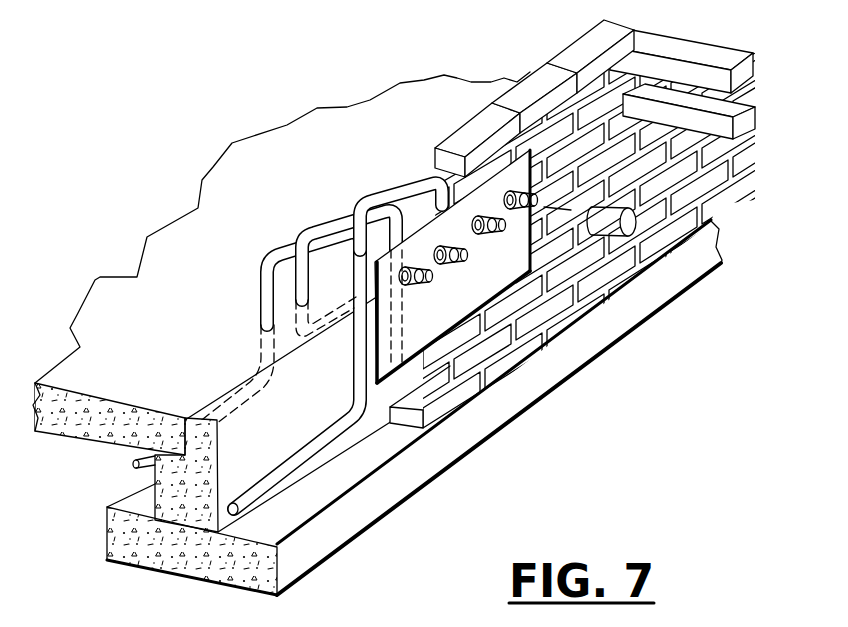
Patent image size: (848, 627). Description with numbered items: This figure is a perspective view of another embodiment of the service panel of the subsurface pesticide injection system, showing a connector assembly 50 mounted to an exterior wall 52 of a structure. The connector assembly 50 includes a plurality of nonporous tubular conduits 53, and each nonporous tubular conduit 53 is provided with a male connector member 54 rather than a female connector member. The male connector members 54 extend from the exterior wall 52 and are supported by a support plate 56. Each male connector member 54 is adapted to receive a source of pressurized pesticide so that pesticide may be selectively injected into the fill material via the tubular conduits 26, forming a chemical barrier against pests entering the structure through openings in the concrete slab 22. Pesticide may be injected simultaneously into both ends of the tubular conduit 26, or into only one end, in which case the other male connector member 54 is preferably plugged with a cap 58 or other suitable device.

The concrete slab 22 is at (113, 328).
The tubular conduit 26 is at (260, 502).
The connector assembly 50 is at (426, 152).
The exterior wall 52 is at (675, 176).
The nonporous tubular conduit 53 is at (277, 240).
The male connector member 54 is at (534, 233).
The support plate 56 is at (455, 307).
The cap 58 is at (640, 233).